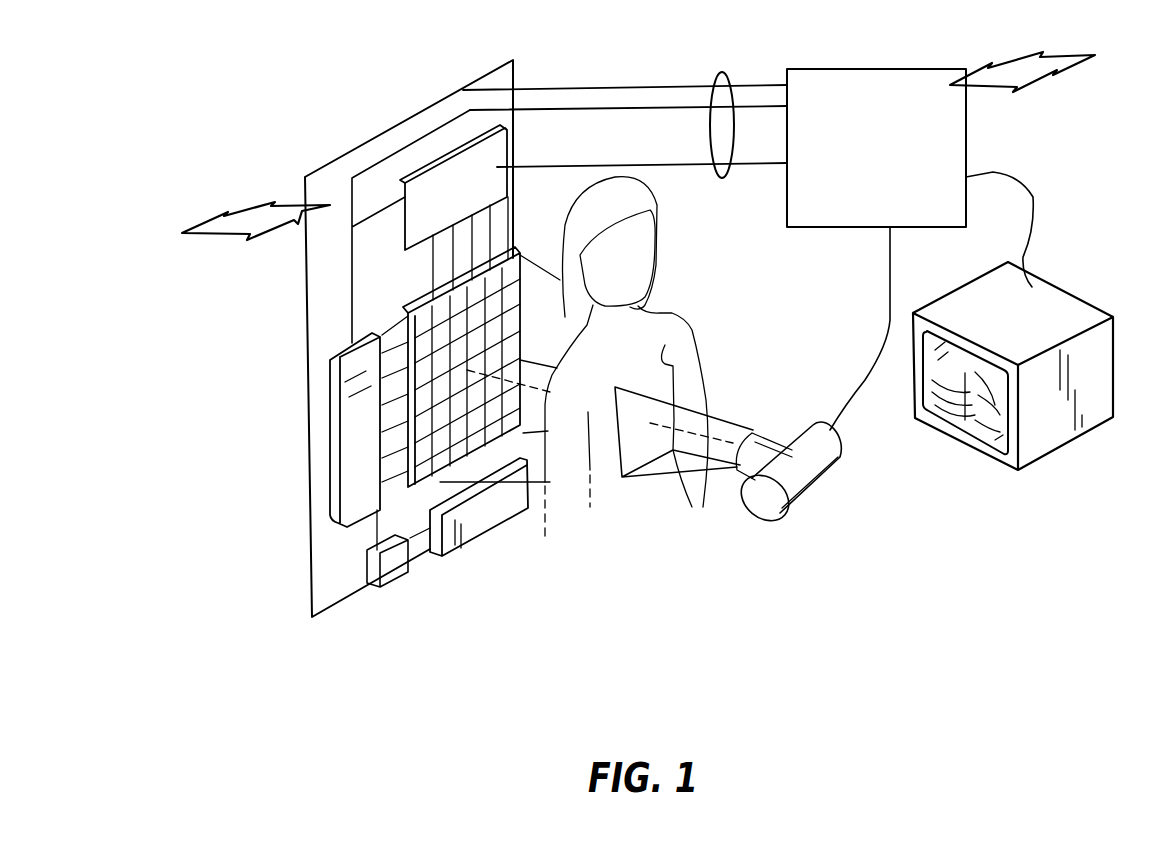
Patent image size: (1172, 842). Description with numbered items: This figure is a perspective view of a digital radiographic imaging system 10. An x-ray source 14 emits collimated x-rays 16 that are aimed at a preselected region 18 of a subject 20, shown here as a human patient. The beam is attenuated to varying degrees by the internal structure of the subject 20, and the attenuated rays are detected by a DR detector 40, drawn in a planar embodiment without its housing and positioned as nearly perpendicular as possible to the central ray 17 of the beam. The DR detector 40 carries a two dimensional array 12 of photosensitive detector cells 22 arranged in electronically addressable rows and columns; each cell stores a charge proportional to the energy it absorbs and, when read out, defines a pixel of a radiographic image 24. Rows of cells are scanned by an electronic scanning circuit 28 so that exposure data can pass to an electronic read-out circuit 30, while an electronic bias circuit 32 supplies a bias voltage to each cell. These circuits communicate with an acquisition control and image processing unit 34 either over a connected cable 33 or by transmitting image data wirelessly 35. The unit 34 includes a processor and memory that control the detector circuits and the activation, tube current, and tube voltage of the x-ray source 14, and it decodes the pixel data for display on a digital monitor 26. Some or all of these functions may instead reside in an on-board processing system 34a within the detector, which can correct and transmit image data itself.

The digital radiographic imaging system 10 is at (1076, 140).
The two dimensional array 12 is at (518, 253).
The x-ray source 14 is at (845, 463).
The x-rays 16 is at (725, 395).
The central ray 17 is at (713, 440).
The preselected region 18 is at (688, 327).
The subject 20 is at (672, 305).
The detector cells 22 is at (433, 297).
The radiographic image 24 is at (970, 425).
The digital monitor 26 is at (1060, 308).
The electronic scanning circuit 28 is at (372, 508).
The electronic read-out circuit 30 is at (442, 185).
The electronic bias circuit 32 is at (472, 527).
The cable 33 is at (725, 75).
The acquisition control and image processing unit 34 is at (968, 122).
The on-board processing system 34a is at (390, 566).
The wireless transmission 35 is at (190, 232).
The DR detector 40 is at (292, 142).